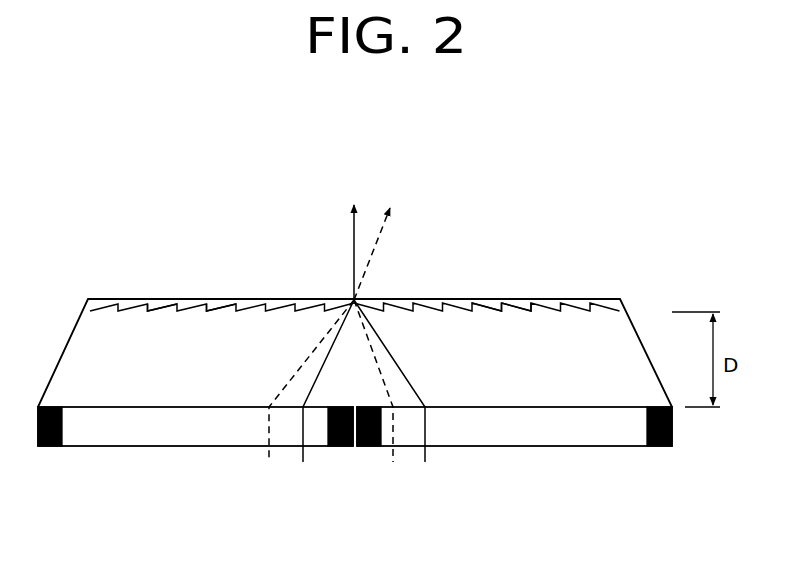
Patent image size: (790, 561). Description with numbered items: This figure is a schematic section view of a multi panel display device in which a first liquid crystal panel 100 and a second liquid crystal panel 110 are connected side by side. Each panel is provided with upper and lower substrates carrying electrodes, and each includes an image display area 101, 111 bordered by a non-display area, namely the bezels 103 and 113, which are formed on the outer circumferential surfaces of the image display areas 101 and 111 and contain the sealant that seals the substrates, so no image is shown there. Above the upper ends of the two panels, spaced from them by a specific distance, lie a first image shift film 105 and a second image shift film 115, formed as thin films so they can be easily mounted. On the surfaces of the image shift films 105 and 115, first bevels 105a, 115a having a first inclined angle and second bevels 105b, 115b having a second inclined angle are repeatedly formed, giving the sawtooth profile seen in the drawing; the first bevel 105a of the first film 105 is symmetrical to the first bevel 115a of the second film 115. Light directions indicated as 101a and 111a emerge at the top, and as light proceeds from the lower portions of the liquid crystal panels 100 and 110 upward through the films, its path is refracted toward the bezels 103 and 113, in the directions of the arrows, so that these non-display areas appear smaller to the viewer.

The first liquid crystal panel 100 is at (196, 384).
The image display area 101 is at (157, 437).
The light emitted from first light guide plate 101a is at (321, 370).
The bezel 103 is at (333, 448).
The first image shift film 105 is at (196, 314).
The first bevel 105a is at (165, 312).
The second bevel 105b is at (229, 310).
The second liquid crystal panel 110 is at (513, 382).
The image display area 111 is at (532, 433).
The light emitted from second light guide plate 111a is at (353, 232).
The bezel 113 is at (368, 448).
The second image shift film 115 is at (513, 311).
The first bevel 115a is at (480, 308).
The second bevel 115b is at (502, 307).